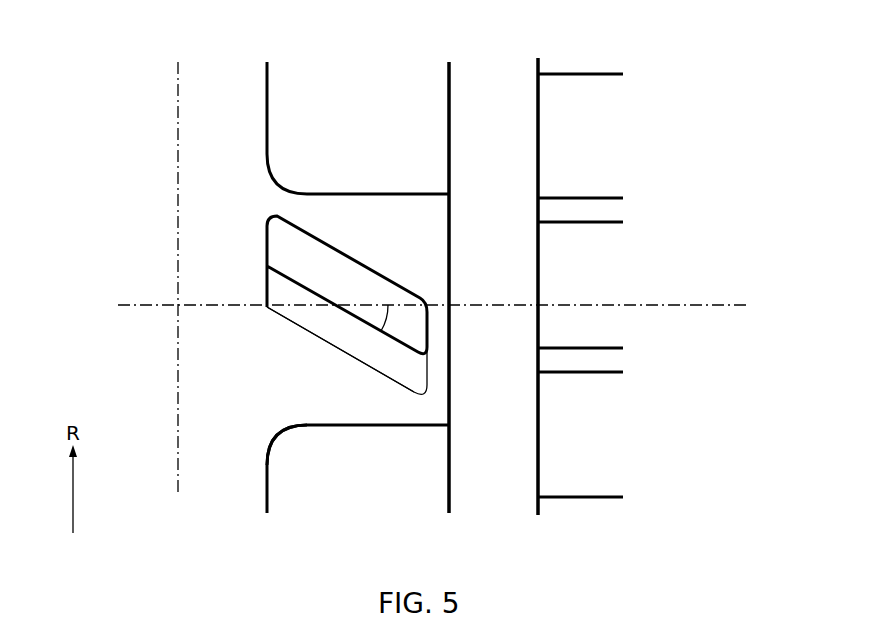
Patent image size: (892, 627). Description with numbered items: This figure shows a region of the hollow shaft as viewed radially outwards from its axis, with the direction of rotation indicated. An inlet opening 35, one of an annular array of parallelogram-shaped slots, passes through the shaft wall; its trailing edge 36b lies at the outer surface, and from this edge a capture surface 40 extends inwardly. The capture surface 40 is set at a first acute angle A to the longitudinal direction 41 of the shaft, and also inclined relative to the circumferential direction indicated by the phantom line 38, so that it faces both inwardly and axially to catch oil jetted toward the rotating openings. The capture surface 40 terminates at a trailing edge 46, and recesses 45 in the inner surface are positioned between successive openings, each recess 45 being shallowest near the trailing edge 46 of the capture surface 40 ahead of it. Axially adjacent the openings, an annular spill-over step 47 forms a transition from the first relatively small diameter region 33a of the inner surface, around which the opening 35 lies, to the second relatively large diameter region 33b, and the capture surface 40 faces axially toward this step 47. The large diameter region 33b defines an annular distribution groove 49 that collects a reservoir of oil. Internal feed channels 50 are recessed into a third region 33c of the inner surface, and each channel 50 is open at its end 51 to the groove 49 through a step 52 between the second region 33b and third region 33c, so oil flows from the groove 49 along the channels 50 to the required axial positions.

The first relatively small diameter region 33a is at (342, 405).
The second relatively large diameter region 33b is at (497, 80).
The third region 33c is at (588, 72).
The inlet opening 35 is at (318, 305).
The trailing edge 36b is at (325, 300).
The circumferential direction 38 is at (176, 160).
The capture surface 40 is at (325, 325).
The longitudinal direction 41 is at (146, 304).
The recess 45 is at (383, 110).
The trailing edge of the capture surface 46 is at (342, 354).
The spill-over step 47 is at (452, 474).
The annular distribution groove 49 is at (472, 97).
The internal feed channel 50 is at (602, 153).
The end of feed channel 51 is at (540, 127).
The step 52 is at (540, 62).
The first acute angle A is at (393, 319).